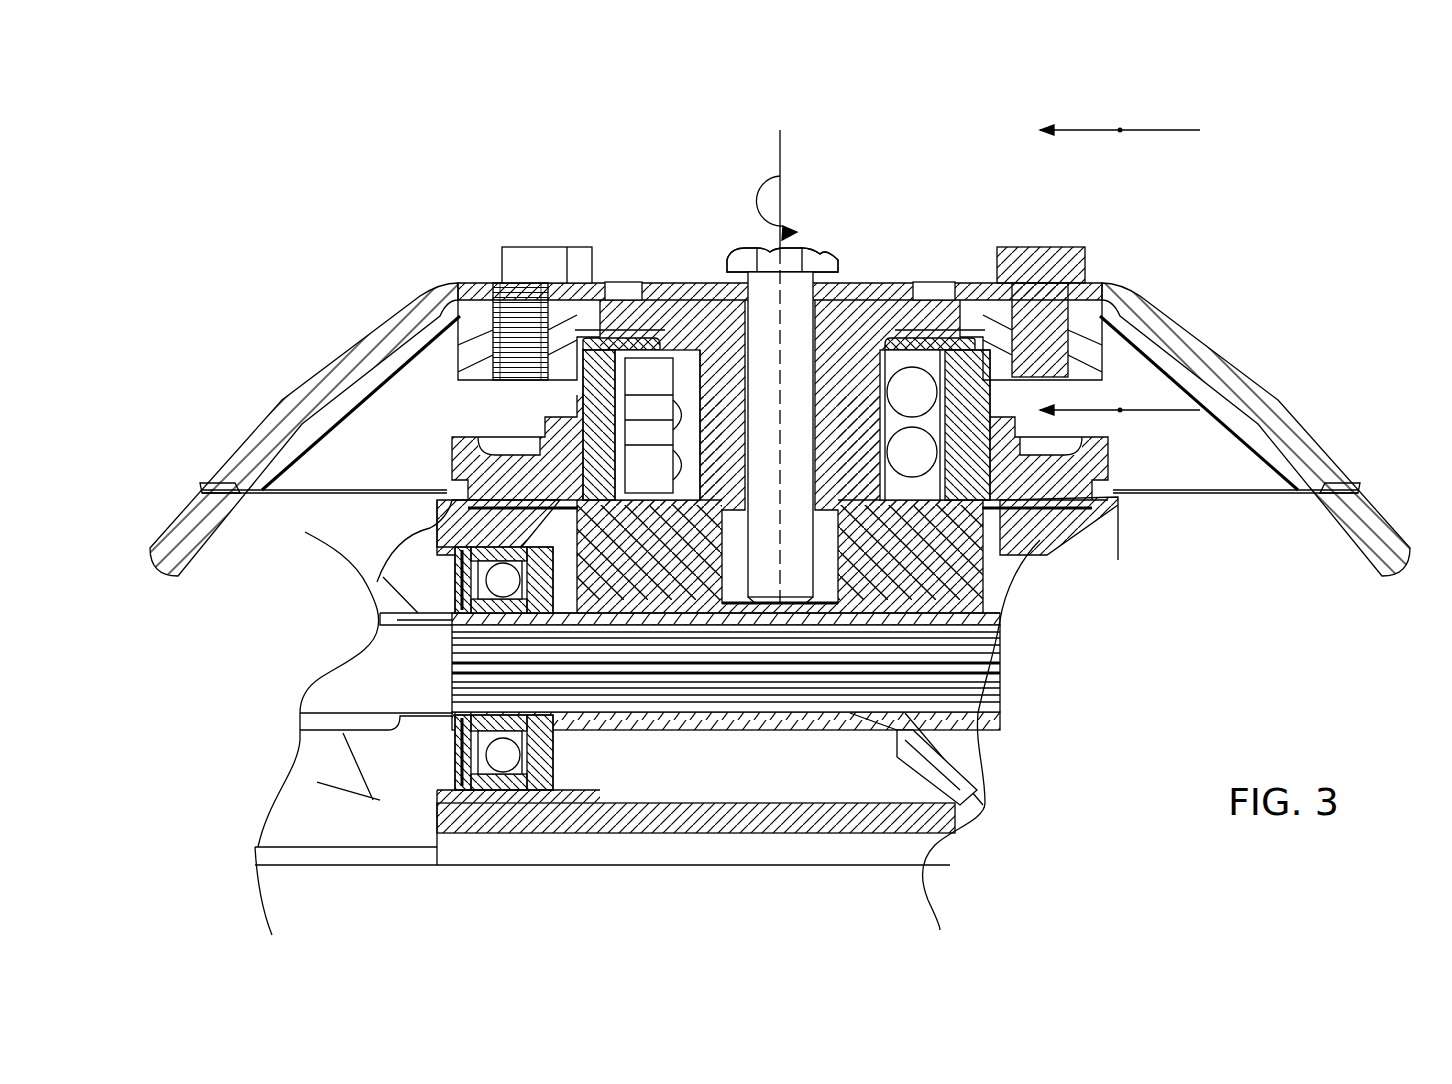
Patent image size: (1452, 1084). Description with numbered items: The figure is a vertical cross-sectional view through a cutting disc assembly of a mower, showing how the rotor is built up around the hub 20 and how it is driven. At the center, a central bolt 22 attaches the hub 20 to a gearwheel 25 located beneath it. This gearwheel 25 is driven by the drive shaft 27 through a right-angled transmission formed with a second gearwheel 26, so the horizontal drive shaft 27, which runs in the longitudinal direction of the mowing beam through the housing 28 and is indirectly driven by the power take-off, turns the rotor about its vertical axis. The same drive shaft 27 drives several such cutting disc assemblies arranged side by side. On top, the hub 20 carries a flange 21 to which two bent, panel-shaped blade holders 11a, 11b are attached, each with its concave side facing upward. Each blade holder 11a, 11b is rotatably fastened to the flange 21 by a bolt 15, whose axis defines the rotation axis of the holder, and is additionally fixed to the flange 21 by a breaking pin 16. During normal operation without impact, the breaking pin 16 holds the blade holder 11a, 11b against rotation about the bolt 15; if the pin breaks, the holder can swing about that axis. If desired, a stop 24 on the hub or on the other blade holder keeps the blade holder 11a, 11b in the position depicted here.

The blade holder 11a is at (300, 432).
The blade holder 11b is at (1258, 432).
The bolt 15 is at (515, 262).
The breaking pin 16 is at (505, 345).
The hub 20 is at (838, 315).
The flange 21 is at (601, 320).
The central bolt 22 is at (743, 260).
The stop 24 is at (622, 290).
The gearwheel 25 is at (910, 545).
The gearwheel 26 is at (965, 612).
The drive shaft 27 is at (937, 680).
The housing 28 is at (700, 818).